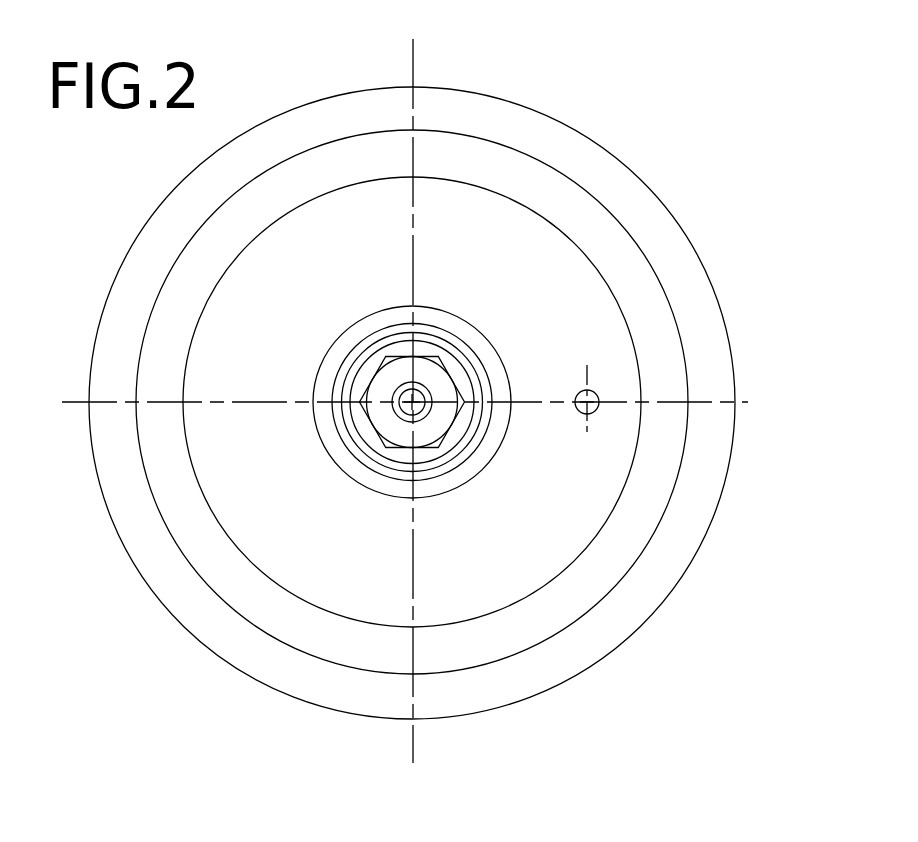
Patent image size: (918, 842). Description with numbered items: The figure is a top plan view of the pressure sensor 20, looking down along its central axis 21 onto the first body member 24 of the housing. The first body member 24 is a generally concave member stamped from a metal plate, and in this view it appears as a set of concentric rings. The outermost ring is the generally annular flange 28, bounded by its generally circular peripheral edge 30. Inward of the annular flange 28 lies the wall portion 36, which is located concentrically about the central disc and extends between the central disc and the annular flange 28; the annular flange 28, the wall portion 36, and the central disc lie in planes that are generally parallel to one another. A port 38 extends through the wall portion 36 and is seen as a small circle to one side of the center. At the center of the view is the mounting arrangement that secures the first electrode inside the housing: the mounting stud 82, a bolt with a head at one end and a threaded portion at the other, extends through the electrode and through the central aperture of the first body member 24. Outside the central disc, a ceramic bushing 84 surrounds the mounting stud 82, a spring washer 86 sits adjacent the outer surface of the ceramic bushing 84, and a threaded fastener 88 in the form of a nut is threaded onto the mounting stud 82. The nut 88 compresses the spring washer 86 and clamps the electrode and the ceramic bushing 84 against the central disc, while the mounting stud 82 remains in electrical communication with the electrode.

The pressure sensor 20 is at (431, 401).
The central axis 21 is at (395, 391).
The first body member 24 is at (429, 403).
The annular flange 28 is at (663, 242).
The peripheral edge 30 is at (703, 253).
The wall portion 36 is at (530, 248).
The port 38 is at (580, 391).
The mounting stud 82 is at (422, 407).
The ceramic bushing 84 is at (347, 429).
The spring washer 86 is at (375, 438).
The threaded fastener 88 is at (436, 382).